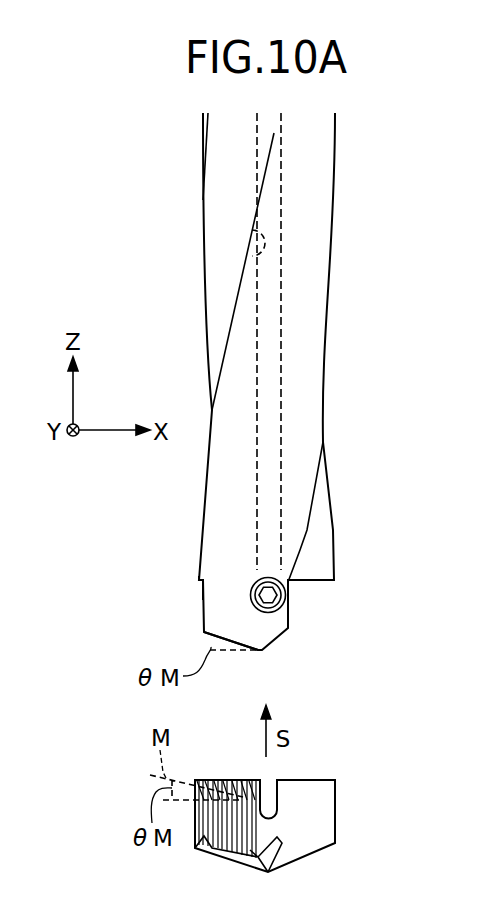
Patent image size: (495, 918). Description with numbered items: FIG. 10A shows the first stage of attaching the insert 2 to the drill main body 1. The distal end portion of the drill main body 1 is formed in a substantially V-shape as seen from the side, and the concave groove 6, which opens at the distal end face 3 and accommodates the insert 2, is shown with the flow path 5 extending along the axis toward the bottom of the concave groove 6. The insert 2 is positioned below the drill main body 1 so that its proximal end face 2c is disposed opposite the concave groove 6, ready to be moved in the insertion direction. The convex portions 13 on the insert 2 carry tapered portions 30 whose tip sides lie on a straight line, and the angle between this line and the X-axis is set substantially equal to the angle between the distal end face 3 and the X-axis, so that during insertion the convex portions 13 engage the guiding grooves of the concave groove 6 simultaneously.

The drill main body 1 is at (340, 184).
The insert 2 is at (320, 815).
The proximal end face of the insert 2c is at (305, 780).
The distal end face 3 is at (203, 636).
The flow path 5 is at (252, 255).
The concave groove 6 is at (203, 592).
The convex portions 13 is at (218, 848).
The tapered portions 30 is at (219, 780).